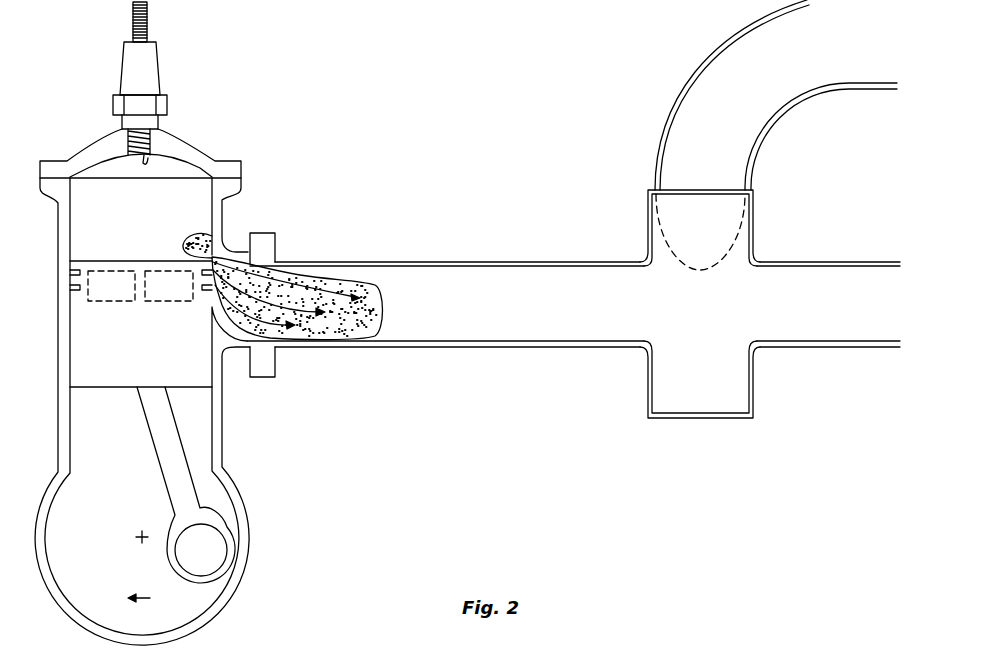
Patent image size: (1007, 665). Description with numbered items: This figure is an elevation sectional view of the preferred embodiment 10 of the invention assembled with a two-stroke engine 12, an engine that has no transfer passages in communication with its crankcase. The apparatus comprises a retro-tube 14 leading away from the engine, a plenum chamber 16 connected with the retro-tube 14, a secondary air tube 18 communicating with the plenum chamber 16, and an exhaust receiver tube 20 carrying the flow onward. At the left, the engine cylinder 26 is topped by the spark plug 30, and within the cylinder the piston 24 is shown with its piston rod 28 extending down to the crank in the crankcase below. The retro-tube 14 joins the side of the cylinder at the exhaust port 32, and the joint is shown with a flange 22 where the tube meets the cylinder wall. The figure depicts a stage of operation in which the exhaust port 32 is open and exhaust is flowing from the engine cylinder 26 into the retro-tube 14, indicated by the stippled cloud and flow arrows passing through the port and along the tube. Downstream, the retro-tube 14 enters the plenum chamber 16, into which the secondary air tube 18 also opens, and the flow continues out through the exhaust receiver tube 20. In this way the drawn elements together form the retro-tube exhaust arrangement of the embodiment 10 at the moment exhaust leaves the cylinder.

The preferred embodiment 10 is at (573, 156).
The two-stroke engine 12 is at (221, 168).
The retro-tube 14 is at (452, 262).
The plenum chamber 16 is at (625, 222).
The secondary air tube 18 is at (680, 87).
The exhaust receiver tube 20 is at (817, 347).
The exhaust port flange 22 is at (263, 233).
The piston 24 is at (150, 354).
The engine cylinder 26 is at (147, 221).
The piston rod 28 is at (178, 468).
The spark plug 30 is at (168, 101).
The exhaust port 32 is at (213, 298).